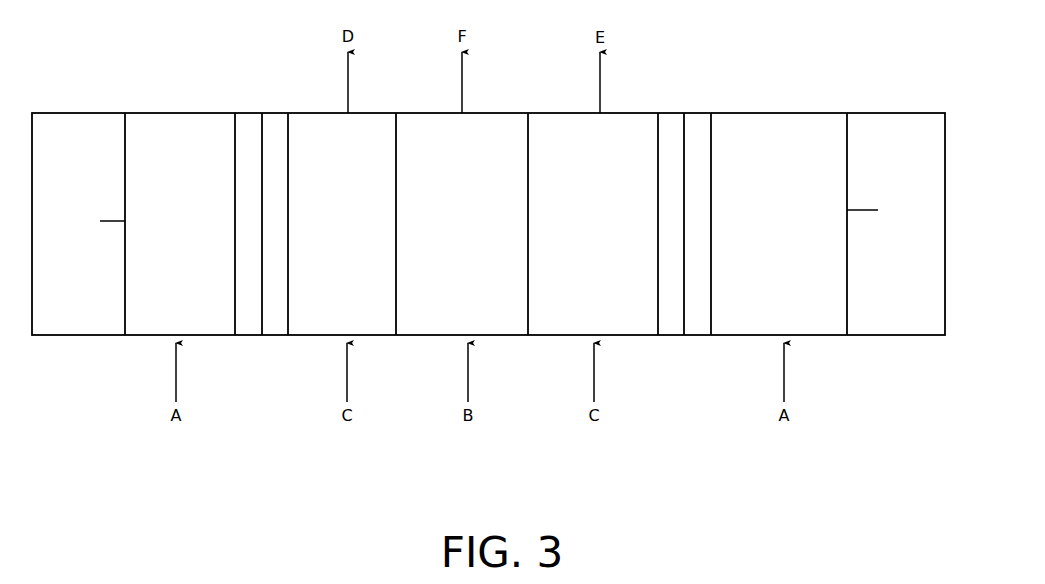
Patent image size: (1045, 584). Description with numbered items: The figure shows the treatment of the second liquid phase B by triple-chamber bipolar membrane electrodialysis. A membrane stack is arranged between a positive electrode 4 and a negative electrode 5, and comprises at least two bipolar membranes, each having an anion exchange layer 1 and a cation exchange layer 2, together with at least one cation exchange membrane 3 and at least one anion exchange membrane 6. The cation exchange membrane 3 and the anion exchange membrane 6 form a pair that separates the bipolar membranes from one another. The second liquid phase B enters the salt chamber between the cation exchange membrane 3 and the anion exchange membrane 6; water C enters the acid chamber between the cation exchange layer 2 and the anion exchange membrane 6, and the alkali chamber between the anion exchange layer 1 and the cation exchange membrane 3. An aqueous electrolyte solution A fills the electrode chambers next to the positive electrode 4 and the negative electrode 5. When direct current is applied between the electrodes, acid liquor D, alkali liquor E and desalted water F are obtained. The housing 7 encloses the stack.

The anion exchange layer of the bipolar membrane 1 is at (243, 188).
The cation exchange layer of the bipolar membrane 2 is at (275, 188).
The cation exchange membrane 3 is at (528, 170).
The positive electrode 4 is at (125, 177).
The negative electrode 5 is at (847, 172).
The anion exchange membrane 6 is at (396, 173).
The housing 7 is at (780, 113).